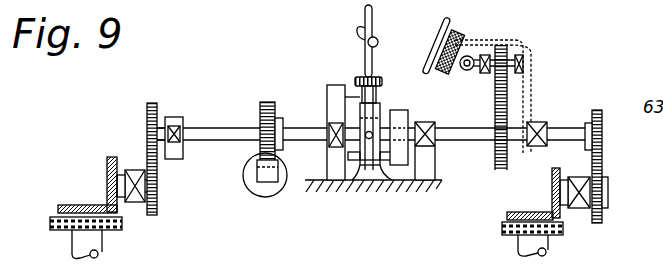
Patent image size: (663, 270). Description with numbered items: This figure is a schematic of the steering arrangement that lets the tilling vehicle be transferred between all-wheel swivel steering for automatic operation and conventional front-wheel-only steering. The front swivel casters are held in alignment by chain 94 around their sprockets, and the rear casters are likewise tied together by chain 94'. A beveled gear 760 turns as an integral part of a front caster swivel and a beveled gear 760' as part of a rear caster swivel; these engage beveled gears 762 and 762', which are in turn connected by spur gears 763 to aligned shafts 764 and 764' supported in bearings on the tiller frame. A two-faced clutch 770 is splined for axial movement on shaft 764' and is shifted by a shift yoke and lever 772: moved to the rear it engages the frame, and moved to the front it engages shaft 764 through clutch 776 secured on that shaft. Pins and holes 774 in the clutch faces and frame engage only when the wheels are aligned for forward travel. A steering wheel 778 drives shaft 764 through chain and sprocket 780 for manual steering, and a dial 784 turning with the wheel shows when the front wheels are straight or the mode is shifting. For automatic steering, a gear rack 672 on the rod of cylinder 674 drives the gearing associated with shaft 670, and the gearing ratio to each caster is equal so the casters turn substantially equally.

The spur gears 763 is at (157, 212).
The shaft 764 is at (468, 121).
The shaft 764' is at (242, 119).
The beveled gear 762 is at (558, 193).
The beveled gear 762' is at (110, 174).
The beveled gear 760 is at (507, 223).
The beveled gear 760' is at (75, 205).
The chain 94 is at (560, 242).
The chain 94' is at (115, 243).
The shaft 670 is at (275, 106).
The gear rack 672 is at (254, 190).
The cylinder 674 is at (243, 172).
The two-faced clutch 770 is at (373, 146).
The shift yoke and lever 772 is at (365, 75).
The pins and holes 774 is at (370, 149).
The clutch 776 is at (401, 110).
The steering wheel 778 is at (452, 26).
The chain and sprocket 780 is at (496, 166).
The dial 784 is at (456, 42).